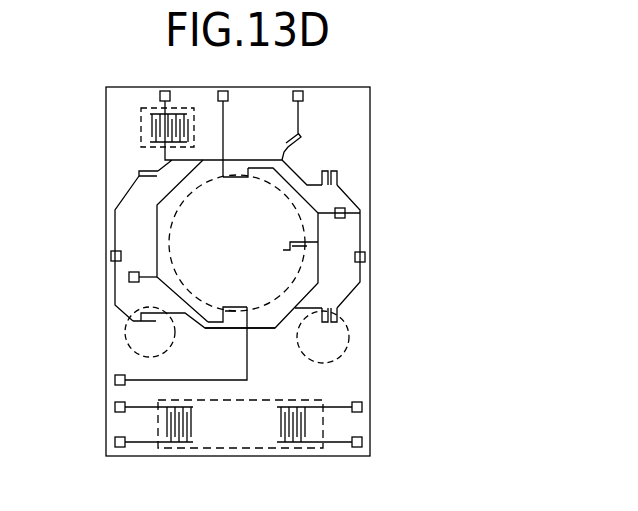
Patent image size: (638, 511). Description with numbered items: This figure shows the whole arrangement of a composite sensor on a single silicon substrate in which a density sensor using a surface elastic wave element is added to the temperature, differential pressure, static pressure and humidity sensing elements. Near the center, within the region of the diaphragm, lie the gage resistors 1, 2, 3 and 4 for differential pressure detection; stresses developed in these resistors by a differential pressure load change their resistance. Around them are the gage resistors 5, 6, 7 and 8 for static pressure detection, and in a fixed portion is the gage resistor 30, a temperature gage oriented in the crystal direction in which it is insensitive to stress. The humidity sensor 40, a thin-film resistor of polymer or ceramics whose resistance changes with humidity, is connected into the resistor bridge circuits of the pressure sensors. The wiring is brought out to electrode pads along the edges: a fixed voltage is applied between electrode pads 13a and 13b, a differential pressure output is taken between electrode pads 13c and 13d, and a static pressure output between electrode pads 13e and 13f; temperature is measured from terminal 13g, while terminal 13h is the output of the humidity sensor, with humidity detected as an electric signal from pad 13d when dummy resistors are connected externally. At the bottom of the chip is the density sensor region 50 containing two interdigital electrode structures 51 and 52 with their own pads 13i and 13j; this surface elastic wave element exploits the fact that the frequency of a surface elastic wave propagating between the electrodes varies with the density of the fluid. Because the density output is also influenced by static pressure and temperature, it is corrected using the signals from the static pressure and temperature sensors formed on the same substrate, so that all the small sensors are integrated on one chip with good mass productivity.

The gage resistor for differential pressure detection 1 is at (178, 247).
The gage resistor for differential pressure detection 2 is at (232, 309).
The gage resistor for differential pressure detection 3 is at (297, 247).
The gage resistor for differential pressure detection 4 is at (250, 172).
The gage resistor for static pressure detection 5 is at (139, 174).
The gage resistor for static pressure detection 6 is at (133, 321).
The gage resistor for static pressure detection 7 is at (337, 316).
The gage resistor for static pressure detection 8 is at (337, 178).
The electrode pad 13a is at (223, 91).
The electrode pad 13b is at (115, 379).
The electrode pad 13c is at (112, 254).
The electrode pad 13d is at (365, 258).
The electrode pad 13e is at (129, 277).
The electrode pad 13f is at (360, 213).
The terminal 13g is at (301, 91).
The output of the humidity sensor 13h is at (164, 91).
The bonding pads 13i is at (362, 441).
The bonding pads 13j is at (115, 441).
The gage resistor 30 is at (317, 157).
The humidity sensor 40 is at (141, 137).
The surface acoustic wave element region 50 is at (257, 448).
The interdigital transducer 51 is at (172, 442).
The interdigital transducer 52 is at (313, 442).